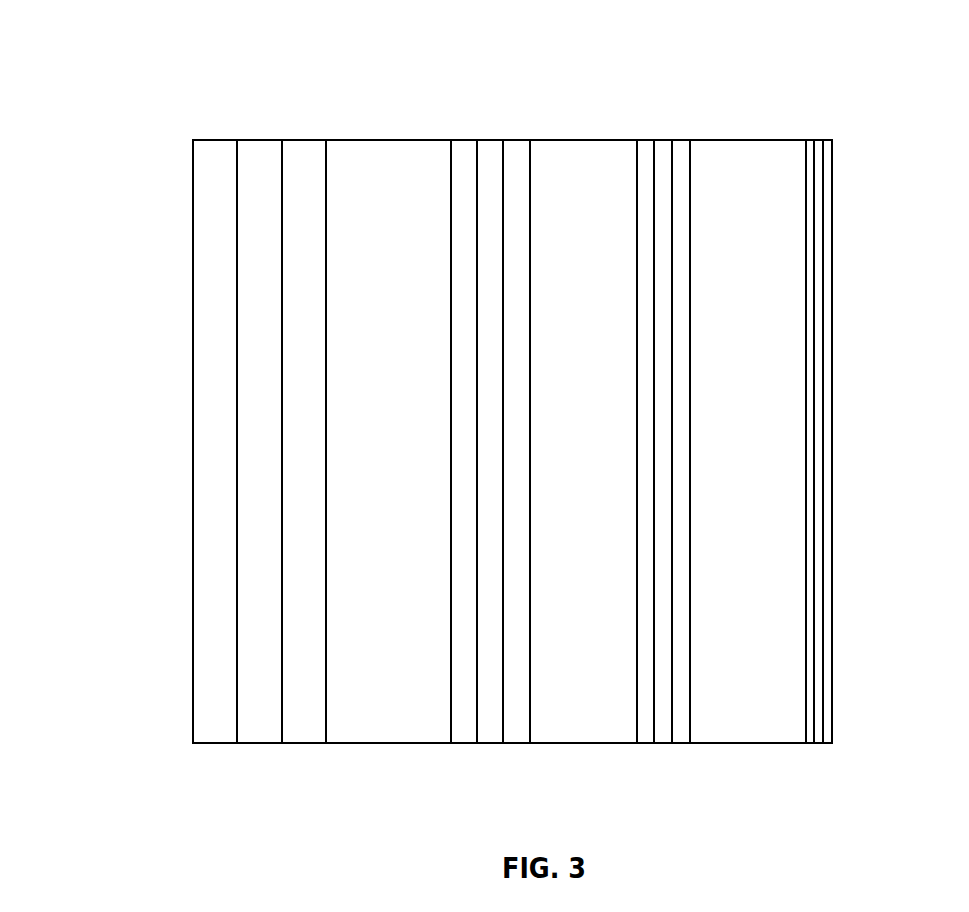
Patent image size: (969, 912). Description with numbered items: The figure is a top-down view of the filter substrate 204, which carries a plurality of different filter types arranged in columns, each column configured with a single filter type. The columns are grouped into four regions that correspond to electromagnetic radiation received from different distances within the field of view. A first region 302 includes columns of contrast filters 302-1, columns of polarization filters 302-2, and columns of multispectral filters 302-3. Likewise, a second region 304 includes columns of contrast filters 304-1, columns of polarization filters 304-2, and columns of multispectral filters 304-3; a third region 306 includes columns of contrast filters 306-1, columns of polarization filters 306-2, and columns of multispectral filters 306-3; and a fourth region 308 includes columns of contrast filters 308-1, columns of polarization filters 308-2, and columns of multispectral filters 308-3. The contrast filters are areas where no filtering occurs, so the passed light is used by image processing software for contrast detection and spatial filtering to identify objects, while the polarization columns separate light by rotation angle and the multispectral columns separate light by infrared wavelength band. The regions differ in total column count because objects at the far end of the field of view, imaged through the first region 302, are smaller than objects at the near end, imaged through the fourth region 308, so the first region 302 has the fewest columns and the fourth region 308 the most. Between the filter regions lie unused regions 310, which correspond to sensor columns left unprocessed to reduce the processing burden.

The filter substrate 204 is at (94, 99).
The first region 302 is at (804, 758).
The columns of contrast filters 302-1 is at (828, 140).
The columns of polarization filters 302-2 is at (818, 140).
The columns of multispectral filters 302-3 is at (808, 140).
The second region 304 is at (635, 758).
The columns of contrast filters 304-1 is at (680, 140).
The columns of polarization filters 304-2 is at (663, 140).
The columns of multispectral filters 304-3 is at (643, 140).
The third region 306 is at (450, 758).
The columns of contrast filters 306-1 is at (518, 140).
The columns of polarization filters 306-2 is at (492, 140).
The columns of multispectral filters 306-3 is at (463, 140).
The fourth region 308 is at (193, 758).
The columns of contrast filters 308-1 is at (305, 140).
The columns of polarization filters 308-2 is at (260, 140).
The columns of multispectral filters 308-3 is at (212, 140).
The unused regions 310 is at (366, 344).